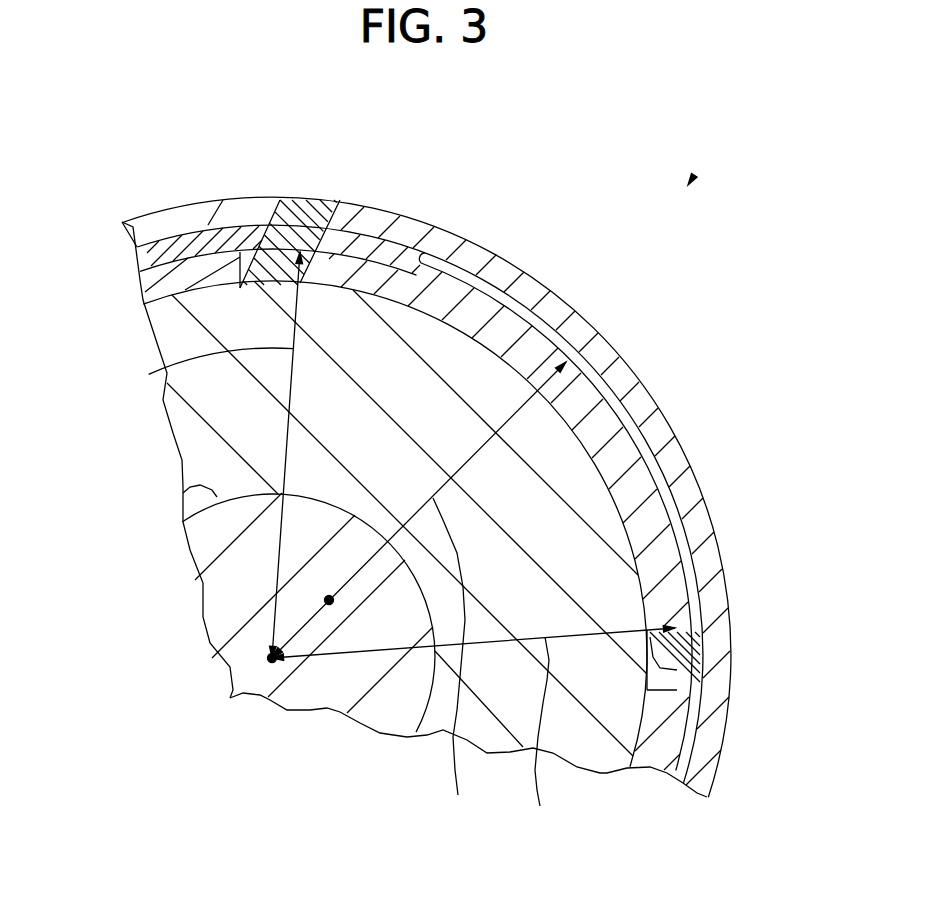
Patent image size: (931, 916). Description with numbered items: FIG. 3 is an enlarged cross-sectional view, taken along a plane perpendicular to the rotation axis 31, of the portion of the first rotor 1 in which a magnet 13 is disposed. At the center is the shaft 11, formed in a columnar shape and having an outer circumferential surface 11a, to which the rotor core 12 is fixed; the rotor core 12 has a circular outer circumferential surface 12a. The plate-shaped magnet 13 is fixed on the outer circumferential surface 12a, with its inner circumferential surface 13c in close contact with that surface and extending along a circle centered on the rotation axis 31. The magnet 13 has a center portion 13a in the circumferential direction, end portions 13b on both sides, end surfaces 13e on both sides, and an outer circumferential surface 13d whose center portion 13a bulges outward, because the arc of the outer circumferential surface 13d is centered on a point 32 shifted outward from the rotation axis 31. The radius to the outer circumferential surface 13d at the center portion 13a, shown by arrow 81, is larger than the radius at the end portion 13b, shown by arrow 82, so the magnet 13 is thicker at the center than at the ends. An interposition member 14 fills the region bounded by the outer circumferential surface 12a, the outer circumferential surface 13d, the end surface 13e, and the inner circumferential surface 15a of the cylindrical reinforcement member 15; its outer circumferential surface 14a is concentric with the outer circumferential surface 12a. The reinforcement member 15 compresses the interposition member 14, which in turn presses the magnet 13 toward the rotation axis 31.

The first rotor 1 is at (729, 138).
The shaft 11 is at (412, 645).
The outer circumferential surface 11a is at (158, 484).
The rotor core 12 is at (365, 489).
The outer circumferential surface 12a is at (381, 479).
The magnet 13 is at (422, 511).
The center portion 13a is at (603, 288).
The end portion 13b is at (525, 390).
The inner circumferential surface 13c is at (657, 340).
The outer circumferential surface 13d is at (703, 422).
The end surface 13e is at (527, 414).
The interposition member 14 is at (278, 205).
The outer circumferential surface 14a is at (213, 159).
The reinforcement member 15 is at (426, 464).
The inner circumferential surface 15a is at (460, 202).
The rotation axis 31 is at (457, 523).
The point 32 is at (313, 699).
The arrow 81 is at (452, 663).
The arrow 82 is at (310, 592).